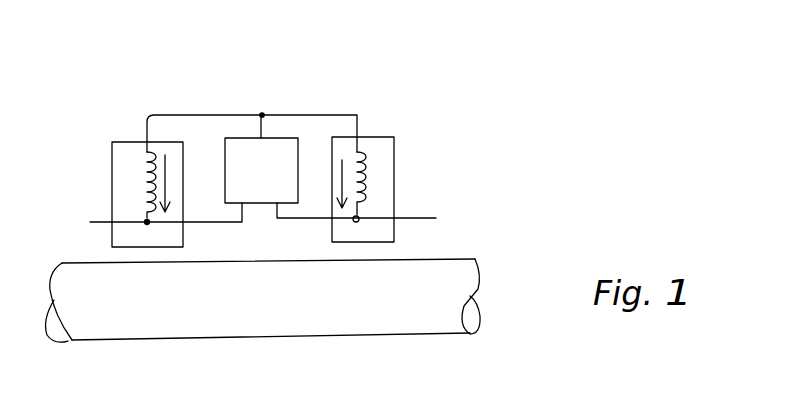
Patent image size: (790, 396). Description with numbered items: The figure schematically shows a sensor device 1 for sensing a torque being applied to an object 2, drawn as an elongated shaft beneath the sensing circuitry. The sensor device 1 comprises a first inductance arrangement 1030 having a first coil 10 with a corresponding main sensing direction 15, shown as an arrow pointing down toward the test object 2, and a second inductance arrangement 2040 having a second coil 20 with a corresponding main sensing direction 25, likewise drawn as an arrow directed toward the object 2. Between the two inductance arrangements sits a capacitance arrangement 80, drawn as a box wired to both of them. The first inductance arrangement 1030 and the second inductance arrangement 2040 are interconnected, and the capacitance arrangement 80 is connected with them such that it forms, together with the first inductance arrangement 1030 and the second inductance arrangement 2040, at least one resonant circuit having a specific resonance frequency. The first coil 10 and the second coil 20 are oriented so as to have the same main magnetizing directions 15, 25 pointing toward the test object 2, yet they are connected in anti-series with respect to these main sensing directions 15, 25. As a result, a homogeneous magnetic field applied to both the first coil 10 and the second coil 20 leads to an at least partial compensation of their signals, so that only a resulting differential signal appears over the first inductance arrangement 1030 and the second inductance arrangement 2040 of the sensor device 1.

The sensor device 1 is at (429, 78).
The object 2 is at (433, 270).
The first coil 10 is at (150, 190).
The main sensing direction 15 is at (173, 172).
The second coil 20 is at (368, 185).
The main sensing direction 25 is at (337, 165).
The capacitance arrangement 80 is at (278, 148).
The first inductance arrangement 1030 is at (122, 152).
The second inductance arrangement 2040 is at (385, 150).